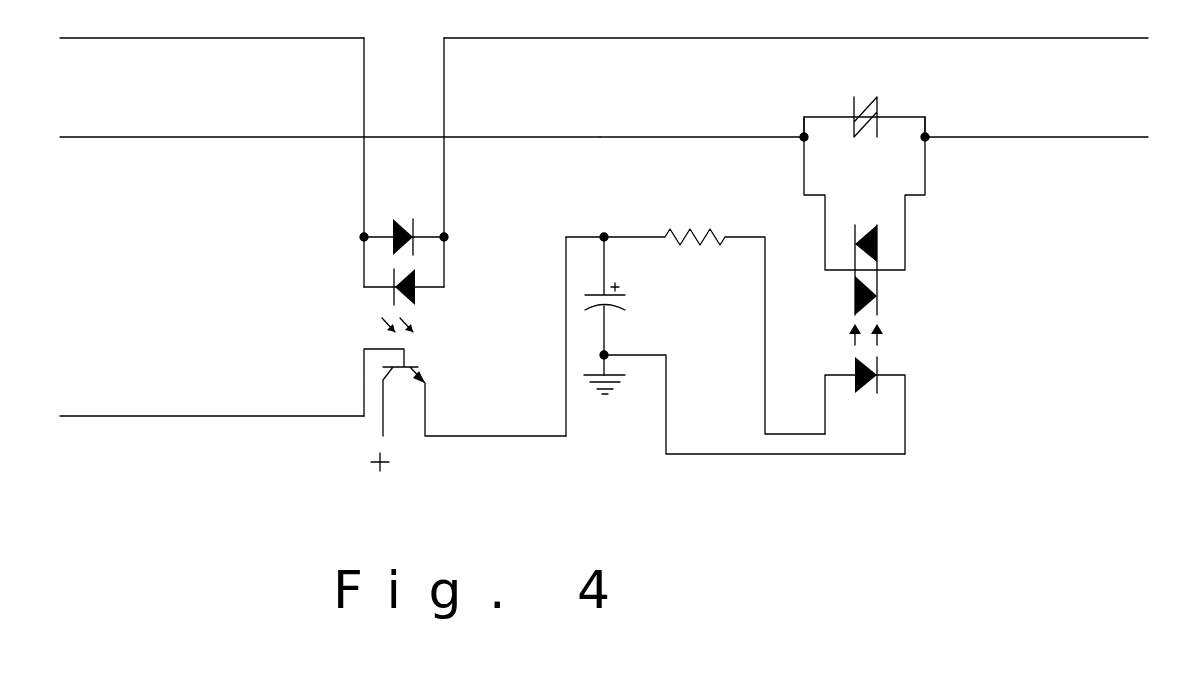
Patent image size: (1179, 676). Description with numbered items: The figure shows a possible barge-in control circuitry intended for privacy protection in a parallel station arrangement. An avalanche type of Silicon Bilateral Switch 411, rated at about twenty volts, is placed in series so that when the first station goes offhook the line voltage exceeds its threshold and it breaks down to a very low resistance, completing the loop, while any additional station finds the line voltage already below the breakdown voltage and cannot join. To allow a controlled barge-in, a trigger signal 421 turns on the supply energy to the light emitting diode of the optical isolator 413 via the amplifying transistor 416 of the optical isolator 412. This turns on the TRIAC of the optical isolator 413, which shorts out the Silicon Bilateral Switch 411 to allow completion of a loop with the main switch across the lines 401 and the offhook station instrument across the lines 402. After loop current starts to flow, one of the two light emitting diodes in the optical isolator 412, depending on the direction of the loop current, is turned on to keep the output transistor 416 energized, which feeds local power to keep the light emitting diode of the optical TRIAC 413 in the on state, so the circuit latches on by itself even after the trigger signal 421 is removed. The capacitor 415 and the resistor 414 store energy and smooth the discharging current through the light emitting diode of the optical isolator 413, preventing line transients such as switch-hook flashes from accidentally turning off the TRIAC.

The lines 401 is at (166, 42).
The lines 402 is at (1012, 41).
The Silicon Bilateral Switch 411 is at (868, 93).
The optical isolator 412 is at (469, 237).
The optical isolator 413 is at (933, 314).
The resistor 414 is at (667, 213).
The capacitor 415 is at (651, 314).
The amplifying transistor 416 is at (451, 354).
The trigger signal 421 is at (146, 414).